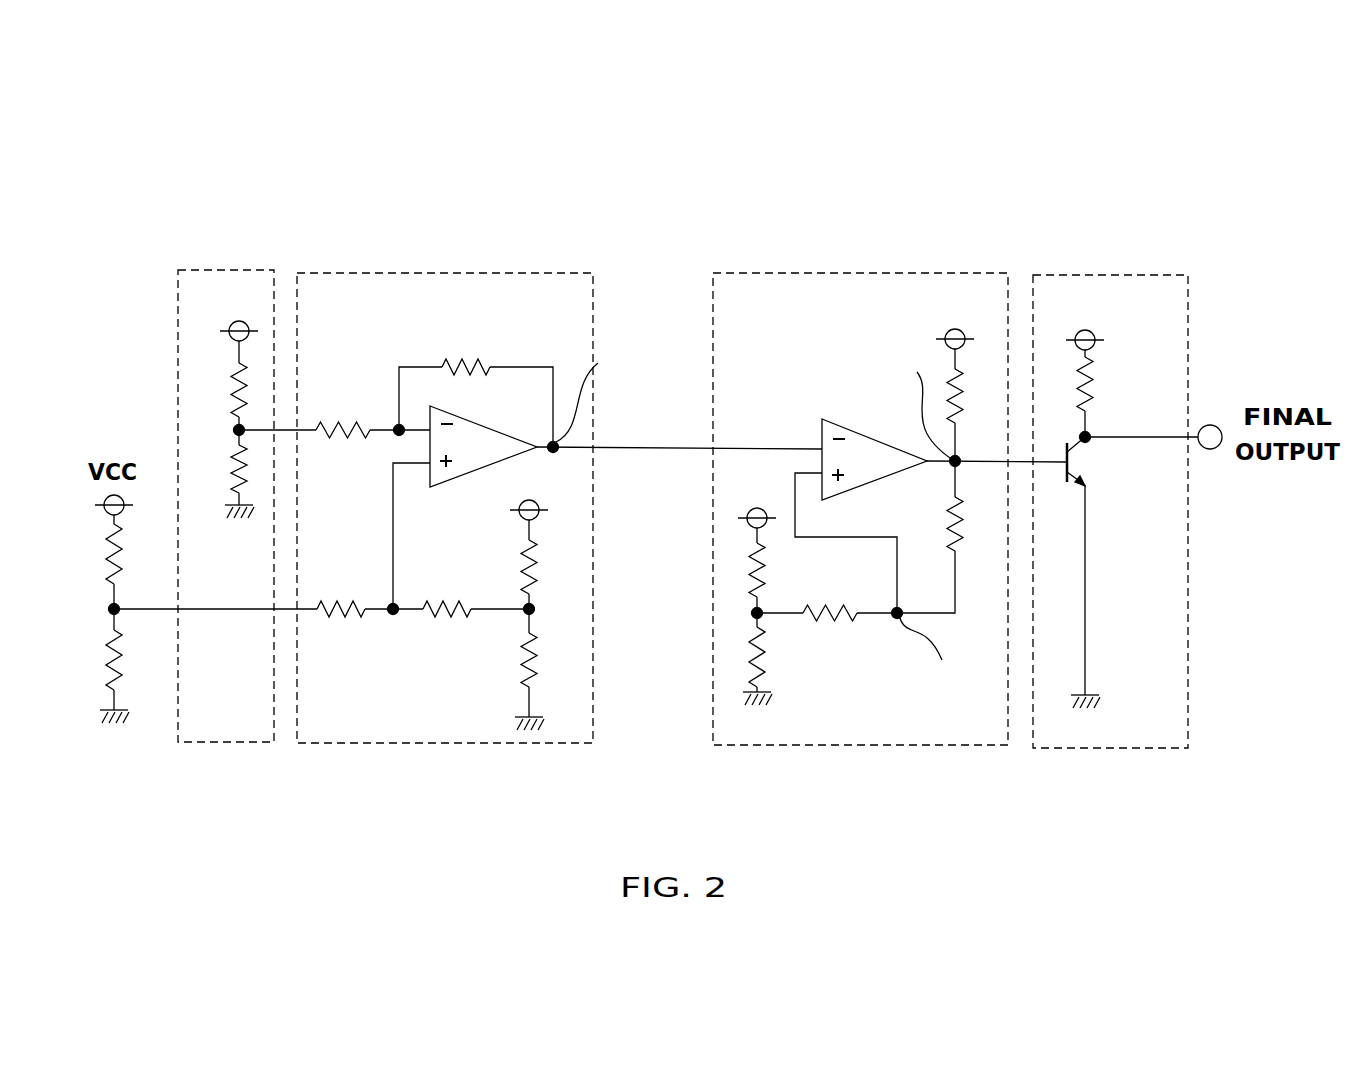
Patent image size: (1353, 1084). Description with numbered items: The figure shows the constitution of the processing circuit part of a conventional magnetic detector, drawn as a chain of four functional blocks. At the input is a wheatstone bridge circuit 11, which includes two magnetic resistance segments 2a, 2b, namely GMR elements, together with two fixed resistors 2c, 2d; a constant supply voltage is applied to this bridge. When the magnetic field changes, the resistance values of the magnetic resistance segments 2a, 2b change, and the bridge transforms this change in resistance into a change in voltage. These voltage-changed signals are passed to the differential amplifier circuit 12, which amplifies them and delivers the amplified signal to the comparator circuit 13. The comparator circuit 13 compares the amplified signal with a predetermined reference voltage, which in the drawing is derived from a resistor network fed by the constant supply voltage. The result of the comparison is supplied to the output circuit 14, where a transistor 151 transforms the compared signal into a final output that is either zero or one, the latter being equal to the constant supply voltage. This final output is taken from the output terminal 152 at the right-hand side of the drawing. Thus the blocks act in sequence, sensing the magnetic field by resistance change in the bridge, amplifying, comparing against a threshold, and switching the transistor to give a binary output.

The wheatstone bridge circuit 11 is at (239, 439).
The differential amplifier circuit 12 is at (559, 440).
The comparator circuit 13 is at (890, 443).
The output circuit 14 is at (1115, 445).
The magnetic resistance segment 2a is at (227, 375).
The magnetic resistance segment 2b is at (228, 470).
The fixed resistor 2c is at (102, 535).
The fixed resistor 2d is at (102, 655).
The transistor 151 is at (1088, 465).
The output terminal 152 is at (1202, 429).